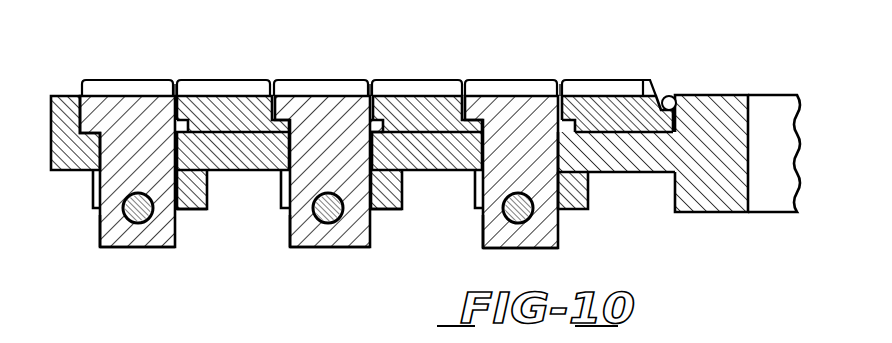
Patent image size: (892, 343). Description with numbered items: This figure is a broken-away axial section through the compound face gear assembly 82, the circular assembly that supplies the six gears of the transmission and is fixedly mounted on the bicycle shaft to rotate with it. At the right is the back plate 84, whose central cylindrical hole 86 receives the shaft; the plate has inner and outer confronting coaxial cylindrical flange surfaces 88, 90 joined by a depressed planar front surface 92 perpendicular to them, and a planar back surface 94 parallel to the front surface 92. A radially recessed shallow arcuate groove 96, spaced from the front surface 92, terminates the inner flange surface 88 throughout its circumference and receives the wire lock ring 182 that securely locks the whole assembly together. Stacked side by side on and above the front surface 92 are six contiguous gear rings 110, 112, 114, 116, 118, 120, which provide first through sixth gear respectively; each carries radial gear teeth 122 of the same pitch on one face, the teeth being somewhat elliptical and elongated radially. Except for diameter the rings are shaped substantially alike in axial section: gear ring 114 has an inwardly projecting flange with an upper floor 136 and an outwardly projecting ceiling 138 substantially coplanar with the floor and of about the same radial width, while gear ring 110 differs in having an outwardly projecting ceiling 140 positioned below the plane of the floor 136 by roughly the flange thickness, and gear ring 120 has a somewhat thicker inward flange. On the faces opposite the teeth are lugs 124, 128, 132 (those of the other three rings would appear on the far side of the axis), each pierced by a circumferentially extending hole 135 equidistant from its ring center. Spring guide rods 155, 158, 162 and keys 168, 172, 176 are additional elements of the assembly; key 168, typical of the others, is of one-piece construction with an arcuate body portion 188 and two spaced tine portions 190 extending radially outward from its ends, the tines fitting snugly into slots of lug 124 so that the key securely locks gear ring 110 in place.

The compound face gear assembly 82 is at (93, 223).
The back plate 84 is at (638, 162).
The central cylindrical hole 86 is at (750, 187).
The inner cylindrical flange surface 88 is at (642, 84).
The outer cylindrical flange surface 90 is at (93, 100).
The depressed planar front surface 92 is at (459, 168).
The planar back surface 94 is at (427, 168).
The radially recessed shallow arcuate groove 96 is at (677, 94).
The gear ring 110 is at (120, 103).
The gear ring 112 is at (245, 105).
The gear ring 114 is at (313, 103).
The gear ring 116 is at (420, 107).
The gear ring 118 is at (520, 98).
The gear ring 120 is at (625, 97).
The radial gear teeth 122 is at (143, 84).
The lug 124 is at (160, 233).
The lug 128 is at (346, 237).
The lug 132 is at (542, 237).
The circumferentially extending hole 135 is at (137, 229).
The upper floor 136 is at (185, 88).
The outwardly projecting ceiling 138 is at (275, 137).
The outwardly projecting ceiling 140 is at (85, 145).
The spring guide rod 155 is at (100, 222).
The spring guide rod 158 is at (290, 225).
The spring guide rod 162 is at (493, 214).
The key 168 is at (192, 210).
The key 172 is at (387, 212).
The key 176 is at (582, 213).
The wire lock ring 182 is at (669, 96).
The arcuate body portion 188 is at (208, 198).
The tine portions 190 is at (94, 198).